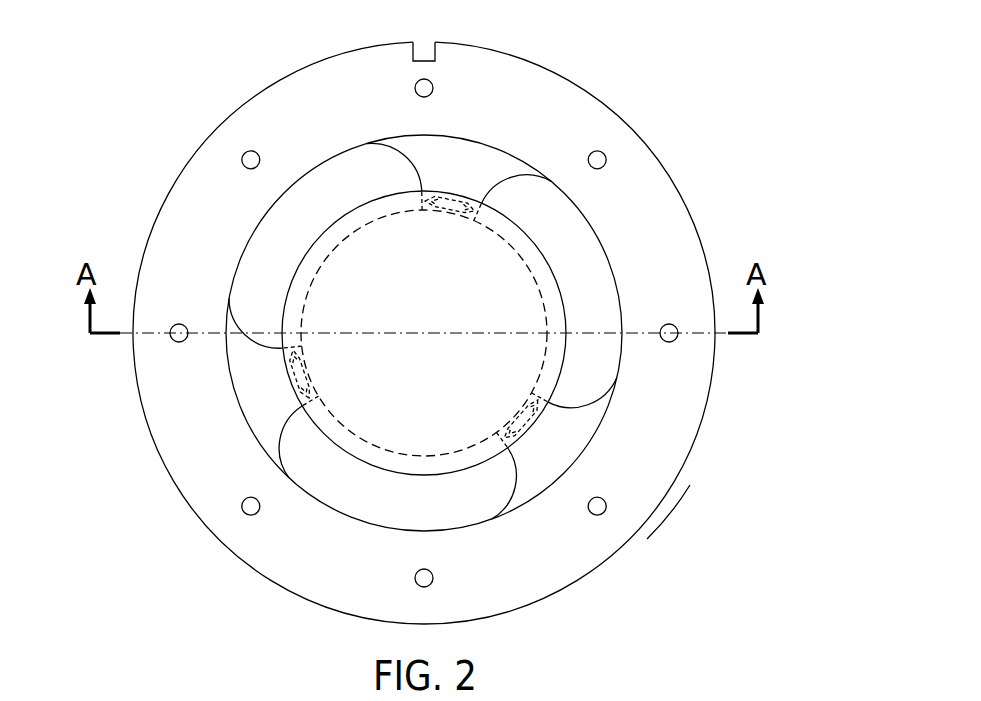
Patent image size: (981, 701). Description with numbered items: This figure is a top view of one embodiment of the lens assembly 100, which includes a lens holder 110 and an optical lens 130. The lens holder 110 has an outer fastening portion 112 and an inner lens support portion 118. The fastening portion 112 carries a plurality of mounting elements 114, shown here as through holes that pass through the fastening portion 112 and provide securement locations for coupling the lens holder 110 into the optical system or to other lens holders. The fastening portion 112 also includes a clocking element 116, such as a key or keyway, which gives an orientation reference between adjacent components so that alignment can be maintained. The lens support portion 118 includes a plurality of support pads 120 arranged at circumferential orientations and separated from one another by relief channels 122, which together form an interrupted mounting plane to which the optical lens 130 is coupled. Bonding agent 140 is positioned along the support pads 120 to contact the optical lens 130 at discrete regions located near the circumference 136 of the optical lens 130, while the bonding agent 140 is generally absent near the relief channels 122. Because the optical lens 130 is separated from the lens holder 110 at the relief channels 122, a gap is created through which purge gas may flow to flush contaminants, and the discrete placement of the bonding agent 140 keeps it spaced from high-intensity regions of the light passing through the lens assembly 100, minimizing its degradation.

The lens assembly 100 is at (692, 82).
The lens holder 110 is at (126, 203).
The fastening portion 112 is at (645, 505).
The mounting elements 114 is at (245, 153).
The clocking element 116 is at (424, 43).
The lens support portion 118 is at (470, 163).
The support pads 120 is at (495, 165).
The relief channels 122 is at (252, 266).
The optical lens 130 is at (578, 372).
The circumference 136 is at (373, 457).
The bonding agent 140 is at (455, 200).